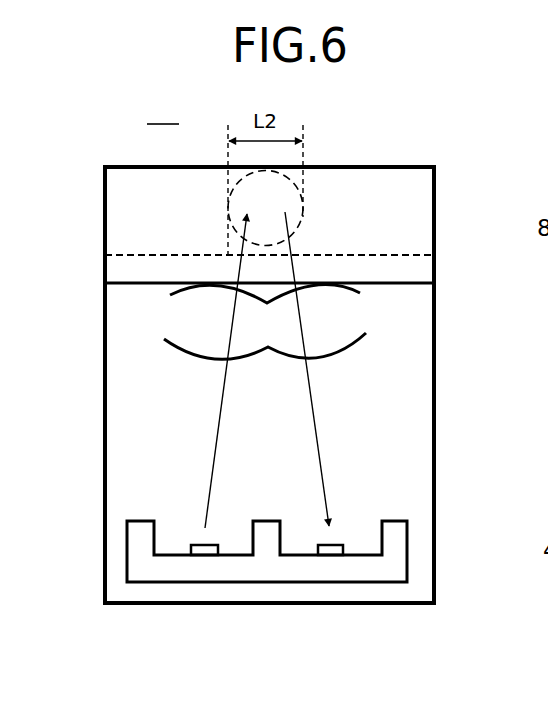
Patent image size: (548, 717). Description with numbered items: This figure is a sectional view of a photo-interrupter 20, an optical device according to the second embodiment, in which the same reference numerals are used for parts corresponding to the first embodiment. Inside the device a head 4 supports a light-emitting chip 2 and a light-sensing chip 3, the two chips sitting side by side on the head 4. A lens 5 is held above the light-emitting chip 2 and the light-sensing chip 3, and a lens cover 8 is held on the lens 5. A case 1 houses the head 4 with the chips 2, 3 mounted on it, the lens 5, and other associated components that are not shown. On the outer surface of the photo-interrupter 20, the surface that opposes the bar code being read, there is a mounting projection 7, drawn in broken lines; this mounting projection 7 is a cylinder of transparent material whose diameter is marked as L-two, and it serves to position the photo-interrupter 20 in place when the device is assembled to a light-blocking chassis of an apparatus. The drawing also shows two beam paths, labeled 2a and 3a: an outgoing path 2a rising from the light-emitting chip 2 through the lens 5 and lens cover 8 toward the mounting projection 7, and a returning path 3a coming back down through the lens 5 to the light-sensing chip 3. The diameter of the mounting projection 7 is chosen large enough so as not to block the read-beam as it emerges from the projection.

The photo-interrupter 20 is at (163, 110).
The case 1 is at (434, 381).
The lens cover 8 is at (427, 266).
The mounting projection 7 is at (303, 215).
The lens 5 is at (352, 318).
The head 4 is at (407, 547).
The light-emitting chip 2 is at (200, 545).
The light-sensing chip 3 is at (337, 543).
The emitted light beam 2a is at (218, 445).
The reflected light beam 3a is at (317, 445).